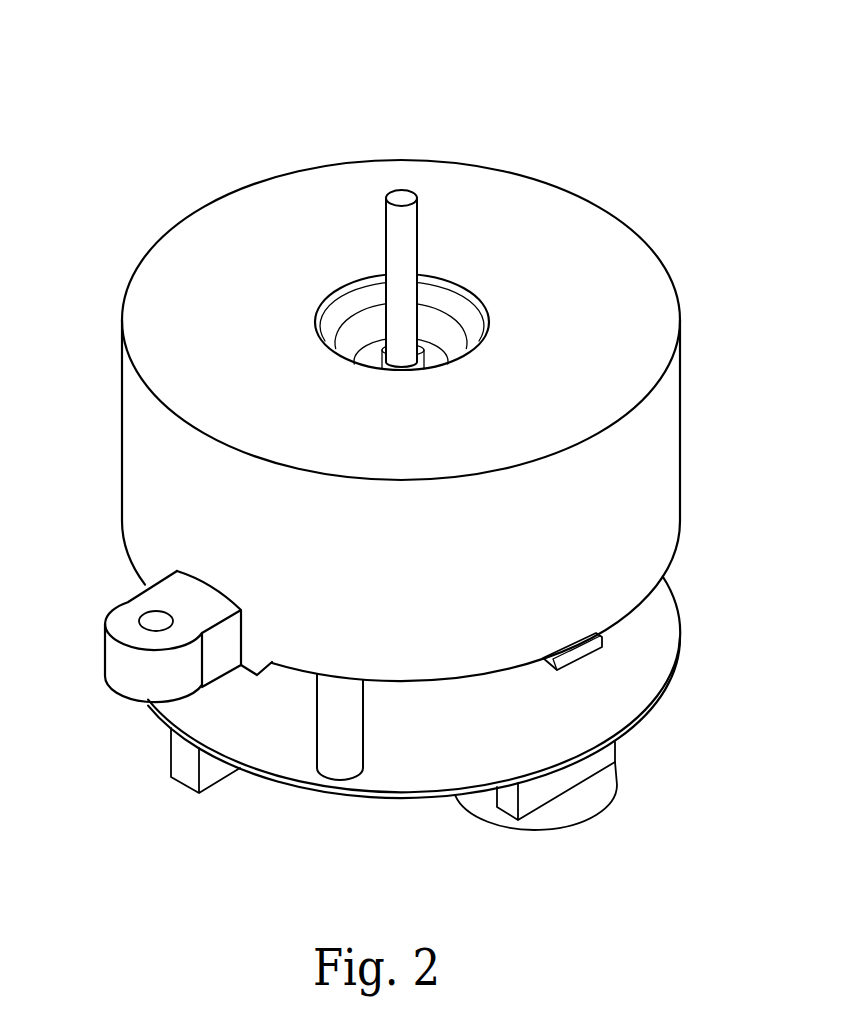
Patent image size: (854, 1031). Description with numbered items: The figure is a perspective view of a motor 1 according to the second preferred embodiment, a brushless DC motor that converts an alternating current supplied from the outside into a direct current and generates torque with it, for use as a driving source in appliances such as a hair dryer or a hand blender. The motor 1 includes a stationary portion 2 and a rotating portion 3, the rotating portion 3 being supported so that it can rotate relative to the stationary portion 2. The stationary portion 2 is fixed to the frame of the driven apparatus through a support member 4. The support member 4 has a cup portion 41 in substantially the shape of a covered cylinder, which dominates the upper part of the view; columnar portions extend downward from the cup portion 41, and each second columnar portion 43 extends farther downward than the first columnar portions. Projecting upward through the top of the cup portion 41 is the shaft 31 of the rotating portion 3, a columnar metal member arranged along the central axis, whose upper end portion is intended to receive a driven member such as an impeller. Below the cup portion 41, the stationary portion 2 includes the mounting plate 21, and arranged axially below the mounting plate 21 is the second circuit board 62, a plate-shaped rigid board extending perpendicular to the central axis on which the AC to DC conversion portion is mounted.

The motor 1 is at (358, 108).
The stationary portion 2 is at (287, 808).
The rotating portion 3 is at (373, 318).
The shaft 31 is at (412, 225).
The support member 4 is at (421, 409).
The cup portion 41 is at (597, 265).
The second circuit board 62 is at (647, 637).
The second columnar portion 43 is at (353, 730).
The mounting plate 21 is at (567, 662).